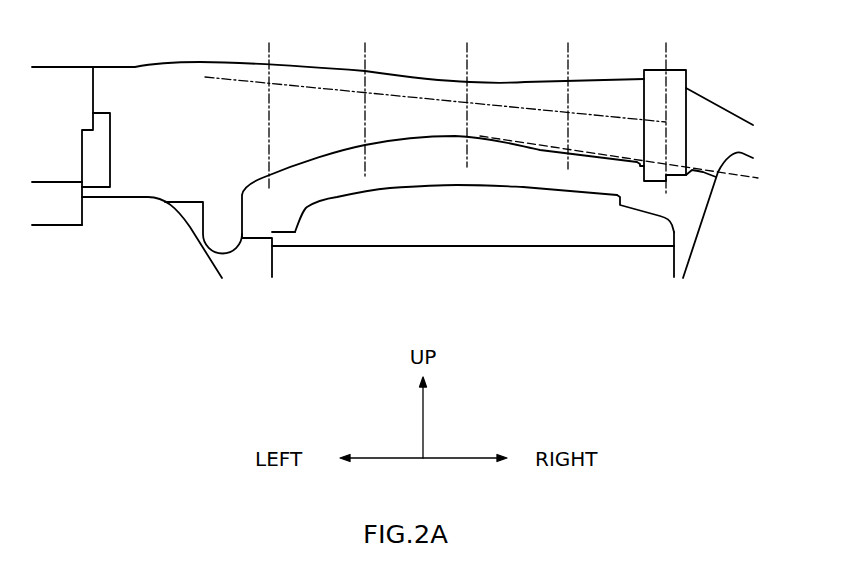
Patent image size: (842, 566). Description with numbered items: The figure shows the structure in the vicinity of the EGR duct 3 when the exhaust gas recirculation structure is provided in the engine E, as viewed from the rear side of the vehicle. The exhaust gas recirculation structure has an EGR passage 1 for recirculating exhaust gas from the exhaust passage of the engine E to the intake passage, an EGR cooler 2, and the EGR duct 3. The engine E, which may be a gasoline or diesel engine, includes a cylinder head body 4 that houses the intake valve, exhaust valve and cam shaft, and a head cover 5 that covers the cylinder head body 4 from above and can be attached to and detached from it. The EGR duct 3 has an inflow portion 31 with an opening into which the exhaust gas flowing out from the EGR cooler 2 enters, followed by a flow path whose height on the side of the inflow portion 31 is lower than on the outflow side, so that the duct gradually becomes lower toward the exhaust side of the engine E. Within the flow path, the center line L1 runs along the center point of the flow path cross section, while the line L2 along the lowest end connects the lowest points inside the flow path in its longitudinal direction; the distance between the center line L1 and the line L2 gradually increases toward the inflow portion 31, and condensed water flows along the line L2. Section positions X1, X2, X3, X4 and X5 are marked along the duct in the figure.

The EGR passage 1 is at (719, 93).
The EGR cooler 2 is at (742, 128).
The EGR duct 3 is at (142, 82).
The inflow portion 31 is at (653, 93).
The cylinder head body 4 is at (340, 260).
The head cover 5 is at (507, 222).
The engine E is at (586, 272).
The center line L1 is at (421, 93).
The line along the lowest end L2 is at (633, 164).
The cross-section position X1 is at (269, 43).
The cross-section position X2 is at (365, 43).
The cross-section position X3 is at (467, 43).
The cross-section position X4 is at (568, 43).
The cross-section position X5 is at (666, 43).